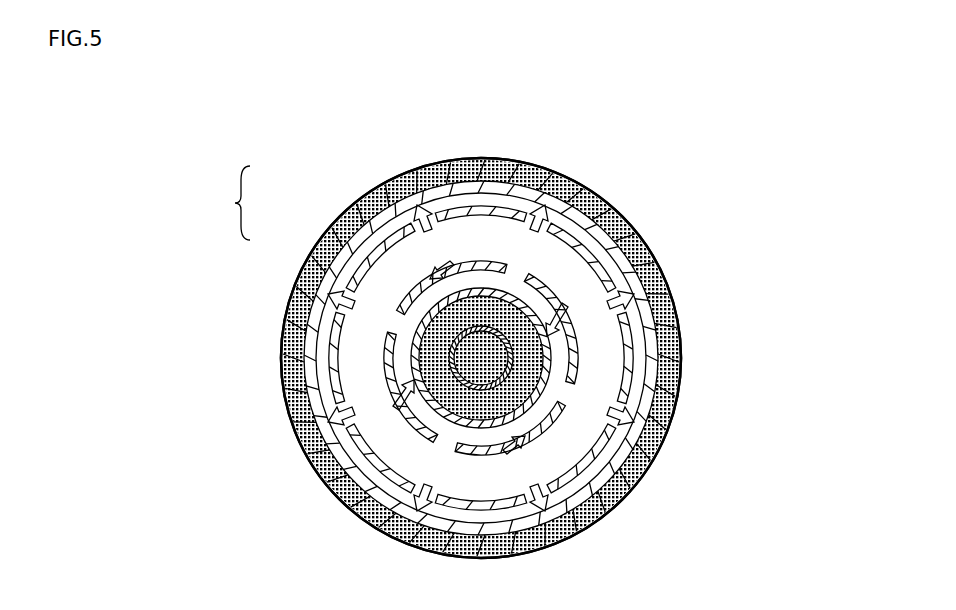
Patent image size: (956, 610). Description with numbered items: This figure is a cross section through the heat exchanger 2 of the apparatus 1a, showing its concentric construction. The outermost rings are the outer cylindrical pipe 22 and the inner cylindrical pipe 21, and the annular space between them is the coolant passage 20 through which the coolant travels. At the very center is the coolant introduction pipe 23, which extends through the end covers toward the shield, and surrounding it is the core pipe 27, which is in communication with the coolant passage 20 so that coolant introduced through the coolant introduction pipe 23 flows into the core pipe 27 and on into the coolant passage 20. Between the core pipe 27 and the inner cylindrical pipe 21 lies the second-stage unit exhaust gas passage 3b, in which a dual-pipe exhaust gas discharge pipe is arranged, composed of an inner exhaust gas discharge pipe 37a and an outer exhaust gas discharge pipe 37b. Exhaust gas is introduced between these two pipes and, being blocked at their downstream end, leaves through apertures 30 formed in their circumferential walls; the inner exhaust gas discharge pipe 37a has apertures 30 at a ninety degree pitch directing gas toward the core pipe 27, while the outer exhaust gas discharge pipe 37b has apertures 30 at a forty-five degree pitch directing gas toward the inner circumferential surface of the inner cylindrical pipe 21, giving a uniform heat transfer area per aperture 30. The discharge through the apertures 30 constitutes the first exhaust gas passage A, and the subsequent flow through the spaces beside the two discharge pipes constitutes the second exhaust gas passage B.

The tire 1a is at (256, 102).
The heat exchanger 2 is at (576, 181).
The coolant passage 20 is at (600, 212).
The inner cylindrical pipe 21 is at (630, 228).
The outer cylindrical pipe 22 is at (662, 270).
The coolant introduction pipe 23 is at (476, 428).
The core pipe 27 is at (377, 512).
The apertures 30 is at (440, 272).
The inner exhaust gas discharge pipe 37a is at (470, 258).
The outer exhaust gas discharge pipe 37b is at (482, 210).
The second-stage unit exhaust gas passage 3b is at (225, 203).
The first exhaust gas passage A is at (370, 292).
The second exhaust gas passage B is at (403, 300).